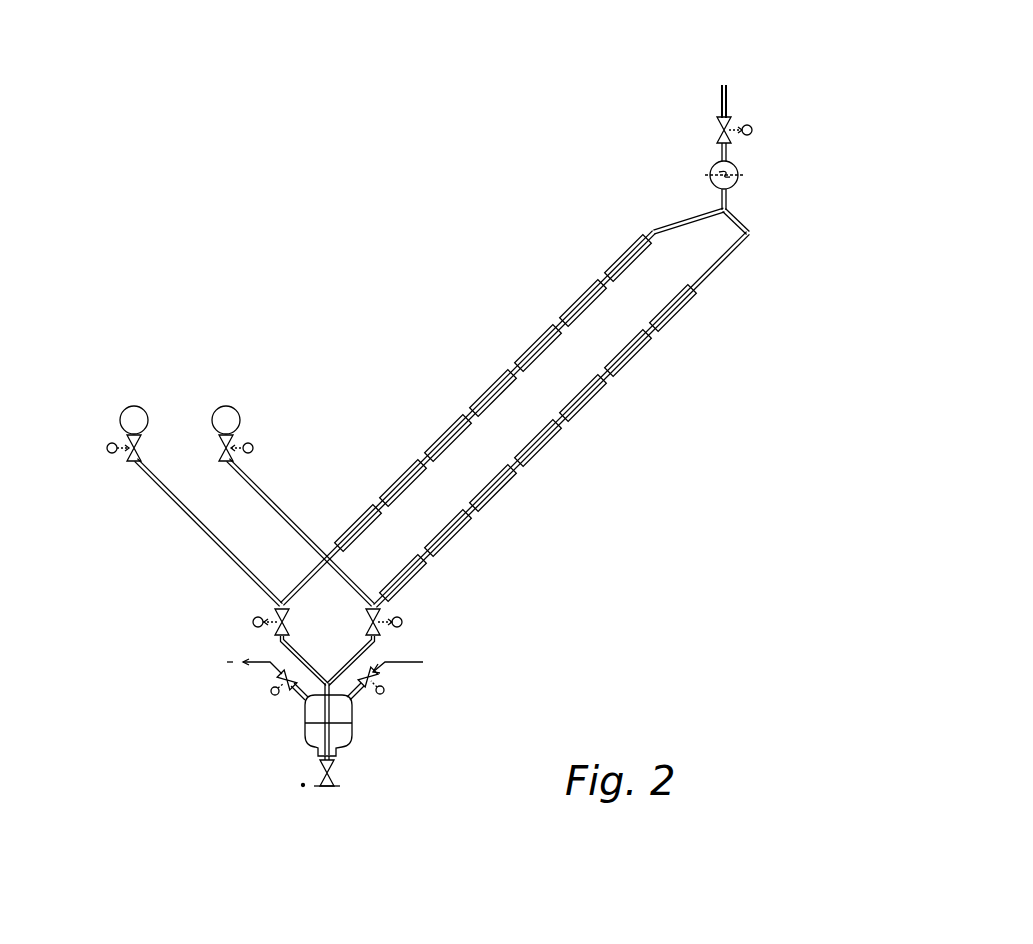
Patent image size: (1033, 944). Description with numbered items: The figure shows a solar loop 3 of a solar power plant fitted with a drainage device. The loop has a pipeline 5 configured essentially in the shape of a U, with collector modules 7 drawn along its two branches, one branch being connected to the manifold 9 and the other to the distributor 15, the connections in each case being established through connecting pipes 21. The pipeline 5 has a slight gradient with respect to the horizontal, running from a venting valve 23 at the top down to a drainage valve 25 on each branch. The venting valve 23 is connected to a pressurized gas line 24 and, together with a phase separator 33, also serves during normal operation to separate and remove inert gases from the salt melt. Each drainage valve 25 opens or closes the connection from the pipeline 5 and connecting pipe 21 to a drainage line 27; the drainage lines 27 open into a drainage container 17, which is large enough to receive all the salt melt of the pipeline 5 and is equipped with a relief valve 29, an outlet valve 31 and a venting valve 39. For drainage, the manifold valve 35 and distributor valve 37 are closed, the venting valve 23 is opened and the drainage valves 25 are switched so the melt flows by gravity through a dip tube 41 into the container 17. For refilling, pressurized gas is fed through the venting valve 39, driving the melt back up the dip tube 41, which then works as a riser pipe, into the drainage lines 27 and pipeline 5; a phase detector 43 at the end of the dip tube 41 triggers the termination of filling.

The solar loop 3 is at (537, 258).
The pipeline 5 is at (670, 222).
The filter modules 7 is at (435, 430).
The manifold 9 is at (147, 415).
The distributor 15 is at (213, 411).
The drainage container 17 is at (357, 733).
The connecting pipes 21 is at (270, 495).
The venting valve 23 is at (718, 118).
The pressurized gas line 24 is at (724, 100).
The drainage valve 25 is at (246, 625).
The drainage line 27 is at (287, 650).
The relief valve 29 is at (278, 676).
The outlet valve 31 is at (297, 787).
The phase separator 33 is at (710, 175).
The manifold valve 35 is at (130, 457).
The distributor valve 37 is at (233, 437).
The venting valve 39 is at (385, 690).
The dip tube 41 is at (282, 722).
The phase detector 43 is at (340, 753).